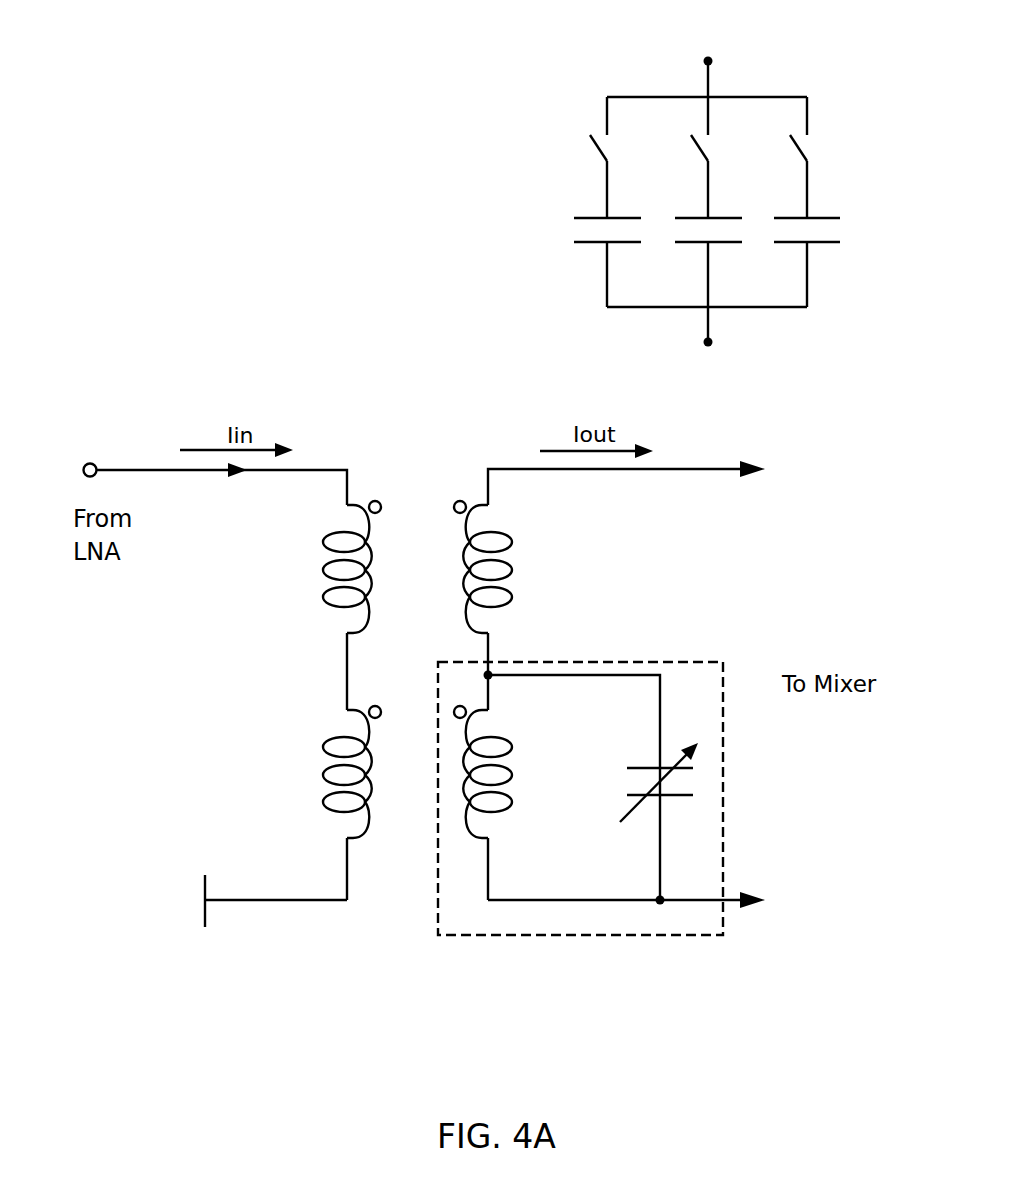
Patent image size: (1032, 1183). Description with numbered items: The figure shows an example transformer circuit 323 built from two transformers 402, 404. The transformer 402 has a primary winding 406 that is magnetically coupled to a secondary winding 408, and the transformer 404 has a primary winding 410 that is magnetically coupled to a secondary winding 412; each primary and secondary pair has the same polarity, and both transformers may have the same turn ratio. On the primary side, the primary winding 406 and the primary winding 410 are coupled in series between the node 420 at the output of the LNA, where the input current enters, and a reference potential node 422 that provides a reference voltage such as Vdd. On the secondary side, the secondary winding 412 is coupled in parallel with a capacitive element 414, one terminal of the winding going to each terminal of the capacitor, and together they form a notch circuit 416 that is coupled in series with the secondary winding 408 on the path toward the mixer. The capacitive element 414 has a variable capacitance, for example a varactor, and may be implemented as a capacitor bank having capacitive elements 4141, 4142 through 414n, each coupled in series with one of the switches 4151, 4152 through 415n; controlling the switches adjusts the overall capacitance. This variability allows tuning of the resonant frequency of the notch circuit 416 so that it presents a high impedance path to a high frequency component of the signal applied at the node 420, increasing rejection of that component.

The transformer circuit 323 is at (264, 306).
The transformer 402 is at (418, 440).
The transformer 404 is at (398, 942).
The primary winding 406 is at (325, 539).
The secondary winding 408 is at (511, 539).
The primary winding 410 is at (325, 744).
The secondary winding 412 is at (511, 744).
The capacitive element 414 is at (568, 38).
The capacitive element 4141 is at (590, 217).
The capacitive element 4142 is at (691, 217).
The capacitive element 414n is at (790, 217).
The switch 4151 is at (592, 143).
The switch 4152 is at (693, 143).
The switch 415n is at (792, 143).
The notch circuit 416 is at (647, 935).
The node 420 is at (87, 463).
The reference potential node 422 is at (290, 899).